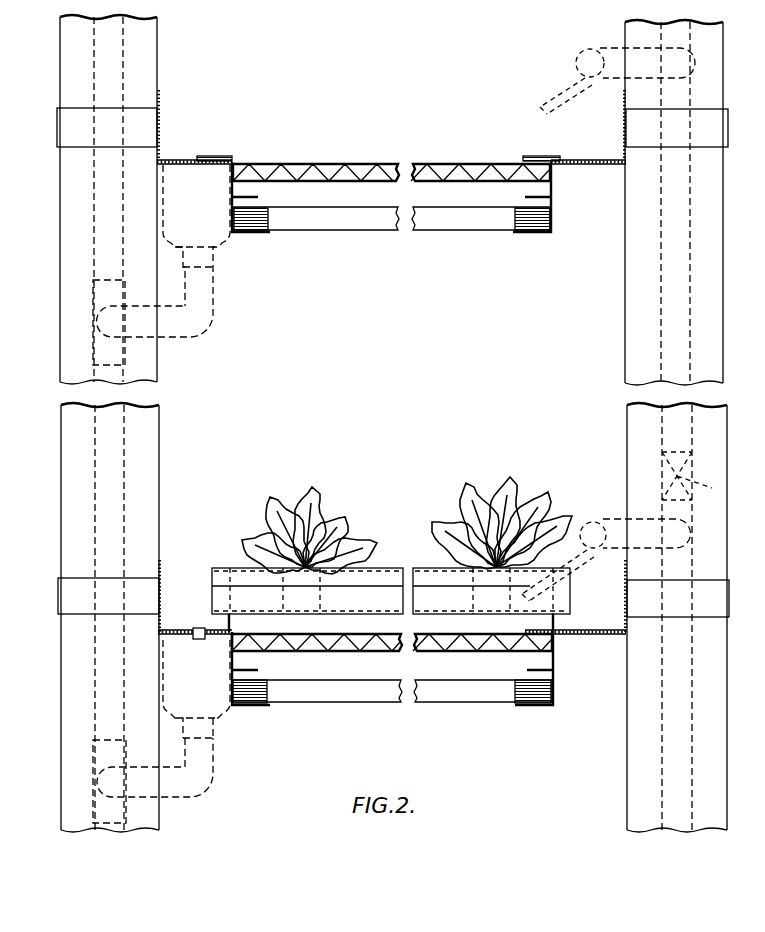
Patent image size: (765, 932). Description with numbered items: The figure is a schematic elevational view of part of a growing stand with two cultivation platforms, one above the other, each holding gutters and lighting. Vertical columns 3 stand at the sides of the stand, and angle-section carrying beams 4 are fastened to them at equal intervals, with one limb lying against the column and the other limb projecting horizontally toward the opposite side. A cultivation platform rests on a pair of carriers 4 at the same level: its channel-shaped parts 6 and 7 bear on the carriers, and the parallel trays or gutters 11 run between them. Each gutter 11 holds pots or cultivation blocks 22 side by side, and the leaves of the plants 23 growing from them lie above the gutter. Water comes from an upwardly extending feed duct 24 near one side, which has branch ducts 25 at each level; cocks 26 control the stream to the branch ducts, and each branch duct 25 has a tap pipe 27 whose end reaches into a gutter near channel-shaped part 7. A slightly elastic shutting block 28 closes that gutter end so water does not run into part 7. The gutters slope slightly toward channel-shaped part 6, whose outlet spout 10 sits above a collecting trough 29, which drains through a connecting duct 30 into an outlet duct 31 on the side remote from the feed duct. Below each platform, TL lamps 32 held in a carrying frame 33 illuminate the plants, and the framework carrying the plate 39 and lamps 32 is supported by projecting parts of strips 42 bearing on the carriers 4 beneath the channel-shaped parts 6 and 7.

The vertical column 3 is at (705, 349).
The carrying beam 4 is at (174, 160).
The channel-shaped part 6 is at (172, 630).
The channel-shaped part 7 is at (573, 632).
The outlet spout 10 is at (203, 640).
The tray or gutter 11 is at (389, 567).
The pot or cultivation block 22 is at (322, 600).
The plant 23 is at (338, 506).
The feed duct 24 is at (660, 758).
The branch duct 25 is at (590, 522).
The cock 26 is at (660, 461).
The tap pipe 27 is at (577, 566).
The shutting block 28 is at (616, 630).
The collecting trough 29 is at (229, 714).
The connecting duct 30 is at (214, 780).
The outlet duct 31 is at (95, 688).
The TL lamp 32 is at (460, 220).
The carrying frame 33 is at (556, 210).
The plate 39 is at (449, 165).
The strip 42 is at (214, 158).